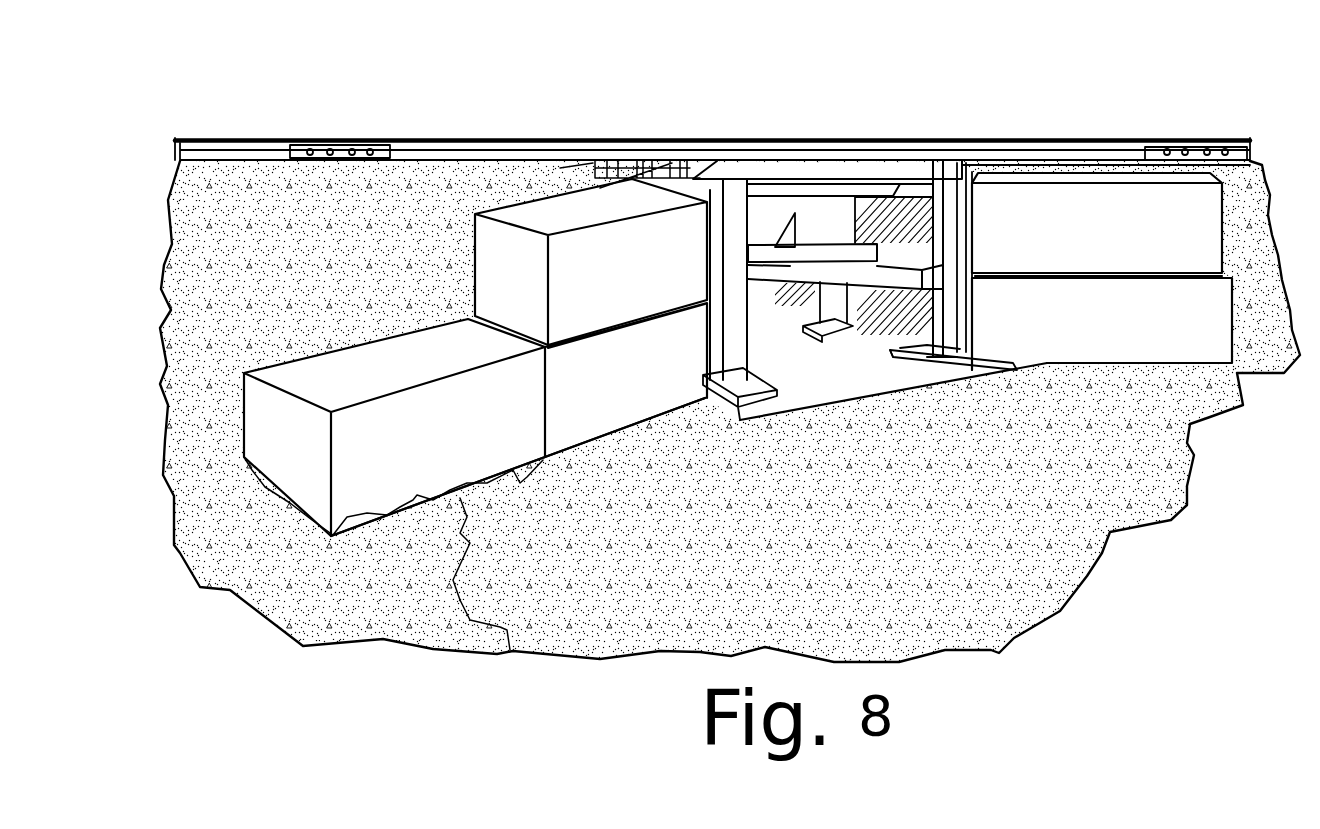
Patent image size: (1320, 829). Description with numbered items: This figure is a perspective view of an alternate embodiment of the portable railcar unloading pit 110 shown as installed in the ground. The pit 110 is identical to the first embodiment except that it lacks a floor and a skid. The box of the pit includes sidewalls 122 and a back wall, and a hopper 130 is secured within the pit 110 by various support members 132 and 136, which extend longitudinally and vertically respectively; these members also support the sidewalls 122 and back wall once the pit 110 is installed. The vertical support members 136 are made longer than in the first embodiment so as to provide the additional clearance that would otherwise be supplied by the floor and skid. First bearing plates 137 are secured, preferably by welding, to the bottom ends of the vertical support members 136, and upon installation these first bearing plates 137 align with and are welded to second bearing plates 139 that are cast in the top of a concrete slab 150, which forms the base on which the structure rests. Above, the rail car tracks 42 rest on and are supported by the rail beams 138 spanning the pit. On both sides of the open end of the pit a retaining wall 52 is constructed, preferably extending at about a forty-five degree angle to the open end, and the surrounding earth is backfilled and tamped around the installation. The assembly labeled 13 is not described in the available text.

The rail car tracks 42 is at (402, 138).
The support structure 13 is at (775, 255).
The pit 110 is at (773, 156).
The rail beams 138 is at (818, 188).
The hopper 130 is at (841, 203).
The sidewalls 122 is at (823, 243).
The support members 132 is at (953, 257).
The vertical support members 136 is at (1140, 150).
The retaining wall 52 is at (738, 354).
The concrete slab 150 is at (689, 444).
The first bearing plates 137 is at (926, 371).
The second bearing plates 139 is at (912, 369).